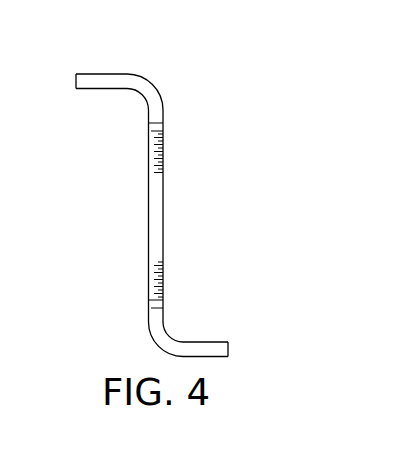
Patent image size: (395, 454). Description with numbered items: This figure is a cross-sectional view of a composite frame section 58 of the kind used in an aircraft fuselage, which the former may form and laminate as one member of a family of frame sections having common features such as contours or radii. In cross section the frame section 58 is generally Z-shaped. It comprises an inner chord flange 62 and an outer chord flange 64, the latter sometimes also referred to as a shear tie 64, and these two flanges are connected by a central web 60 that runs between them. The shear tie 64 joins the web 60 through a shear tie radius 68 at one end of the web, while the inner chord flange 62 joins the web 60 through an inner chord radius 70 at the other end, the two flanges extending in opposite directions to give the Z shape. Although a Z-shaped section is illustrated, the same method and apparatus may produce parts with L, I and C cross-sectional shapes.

The frame section 58 is at (184, 188).
The central web 60 is at (163, 215).
The inner chord flange 62 is at (205, 341).
The outer chord flange 64 is at (103, 74).
The shear tie radius 68 is at (137, 93).
The inner chord radius 70 is at (170, 336).